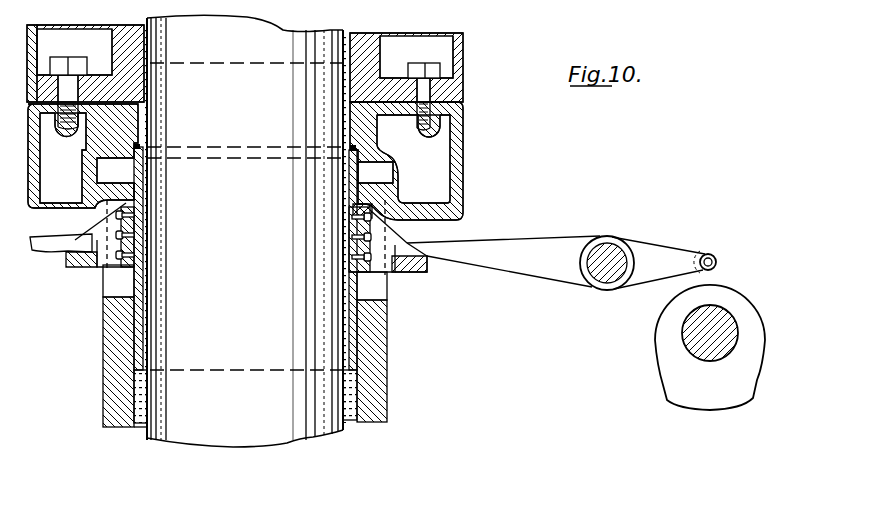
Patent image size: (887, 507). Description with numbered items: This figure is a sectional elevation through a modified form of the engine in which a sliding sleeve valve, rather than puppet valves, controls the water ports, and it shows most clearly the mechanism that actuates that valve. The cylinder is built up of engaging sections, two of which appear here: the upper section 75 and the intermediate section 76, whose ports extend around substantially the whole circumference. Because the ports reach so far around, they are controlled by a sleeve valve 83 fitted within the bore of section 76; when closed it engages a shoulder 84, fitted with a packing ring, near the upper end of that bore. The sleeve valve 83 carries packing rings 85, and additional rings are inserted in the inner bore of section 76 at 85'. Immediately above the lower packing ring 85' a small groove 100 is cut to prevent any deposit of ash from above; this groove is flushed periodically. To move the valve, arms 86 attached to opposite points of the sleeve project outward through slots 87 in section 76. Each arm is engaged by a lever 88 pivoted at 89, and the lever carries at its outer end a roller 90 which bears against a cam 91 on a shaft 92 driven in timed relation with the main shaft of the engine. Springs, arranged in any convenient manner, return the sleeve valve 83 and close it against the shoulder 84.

The cylinder section 75 is at (377, 47).
The intermediate cylinder section 76 is at (374, 366).
The sleeve valve 83 is at (131, 278).
The shoulder 84 is at (141, 146).
The packing rings 85 is at (385, 260).
The additional packing rings 85' is at (399, 199).
The arms 86 is at (440, 231).
The slots 87 is at (113, 274).
The levers 88 is at (43, 248).
The pivot 89 is at (617, 253).
The rollers 90 is at (716, 256).
The cams 91 is at (672, 350).
The shafts 92 is at (718, 314).
The groove 100 is at (366, 174).